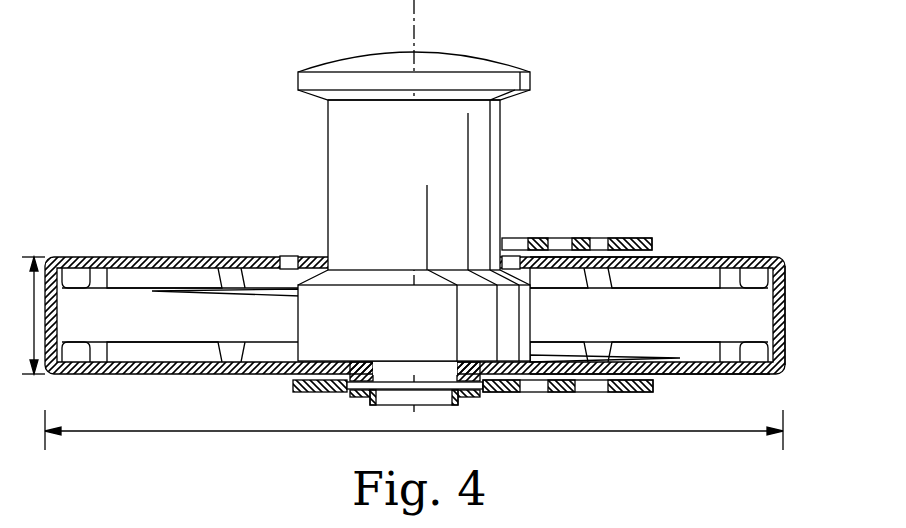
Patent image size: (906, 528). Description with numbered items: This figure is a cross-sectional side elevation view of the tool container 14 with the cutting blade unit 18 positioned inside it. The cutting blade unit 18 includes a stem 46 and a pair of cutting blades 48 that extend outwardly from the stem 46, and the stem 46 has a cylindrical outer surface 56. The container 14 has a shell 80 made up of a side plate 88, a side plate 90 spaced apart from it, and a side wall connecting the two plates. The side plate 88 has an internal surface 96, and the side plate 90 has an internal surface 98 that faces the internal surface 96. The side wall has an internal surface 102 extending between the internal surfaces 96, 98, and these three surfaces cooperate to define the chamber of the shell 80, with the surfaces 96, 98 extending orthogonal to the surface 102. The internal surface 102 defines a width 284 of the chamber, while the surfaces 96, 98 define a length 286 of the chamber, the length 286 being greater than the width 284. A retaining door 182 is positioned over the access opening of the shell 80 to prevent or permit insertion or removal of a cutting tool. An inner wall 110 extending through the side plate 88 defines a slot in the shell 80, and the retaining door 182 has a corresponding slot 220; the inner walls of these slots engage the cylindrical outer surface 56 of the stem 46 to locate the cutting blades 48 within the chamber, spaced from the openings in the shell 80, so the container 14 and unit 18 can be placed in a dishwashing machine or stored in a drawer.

The tool container 14 is at (696, 79).
The cutting blade unit 18 is at (452, 60).
The stem 46 is at (505, 132).
The cylindrical outer surface 56 is at (494, 178).
The slot 220 is at (516, 245).
The inner wall 110 is at (316, 258).
The side plate 88 is at (618, 246).
The retaining door 182 is at (645, 241).
The internal surface 96 is at (693, 264).
The shell 80 is at (764, 257).
The internal surface 102 is at (772, 298).
The width 284 is at (48, 313).
The cutting blades 48 is at (229, 293).
The side plate 90 is at (656, 376).
The internal surface 98 is at (700, 363).
The length 286 is at (238, 432).